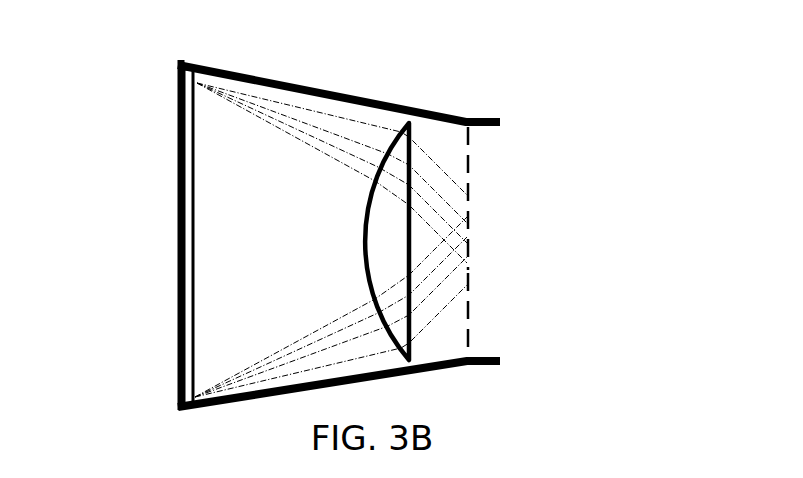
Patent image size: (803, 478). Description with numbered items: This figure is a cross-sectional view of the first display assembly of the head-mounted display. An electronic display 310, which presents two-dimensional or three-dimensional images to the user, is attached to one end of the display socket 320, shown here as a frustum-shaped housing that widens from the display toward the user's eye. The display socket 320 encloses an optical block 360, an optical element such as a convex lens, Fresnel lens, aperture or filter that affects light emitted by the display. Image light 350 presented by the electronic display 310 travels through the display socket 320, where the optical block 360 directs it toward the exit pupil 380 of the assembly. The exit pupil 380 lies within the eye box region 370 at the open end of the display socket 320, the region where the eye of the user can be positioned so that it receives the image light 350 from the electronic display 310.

The electronic display 310 is at (177, 318).
The display socket 320 is at (395, 103).
The image light 350 is at (313, 132).
The optical block 360 is at (366, 279).
The eye box region 370 is at (469, 316).
The exit pupil 380 is at (469, 252).